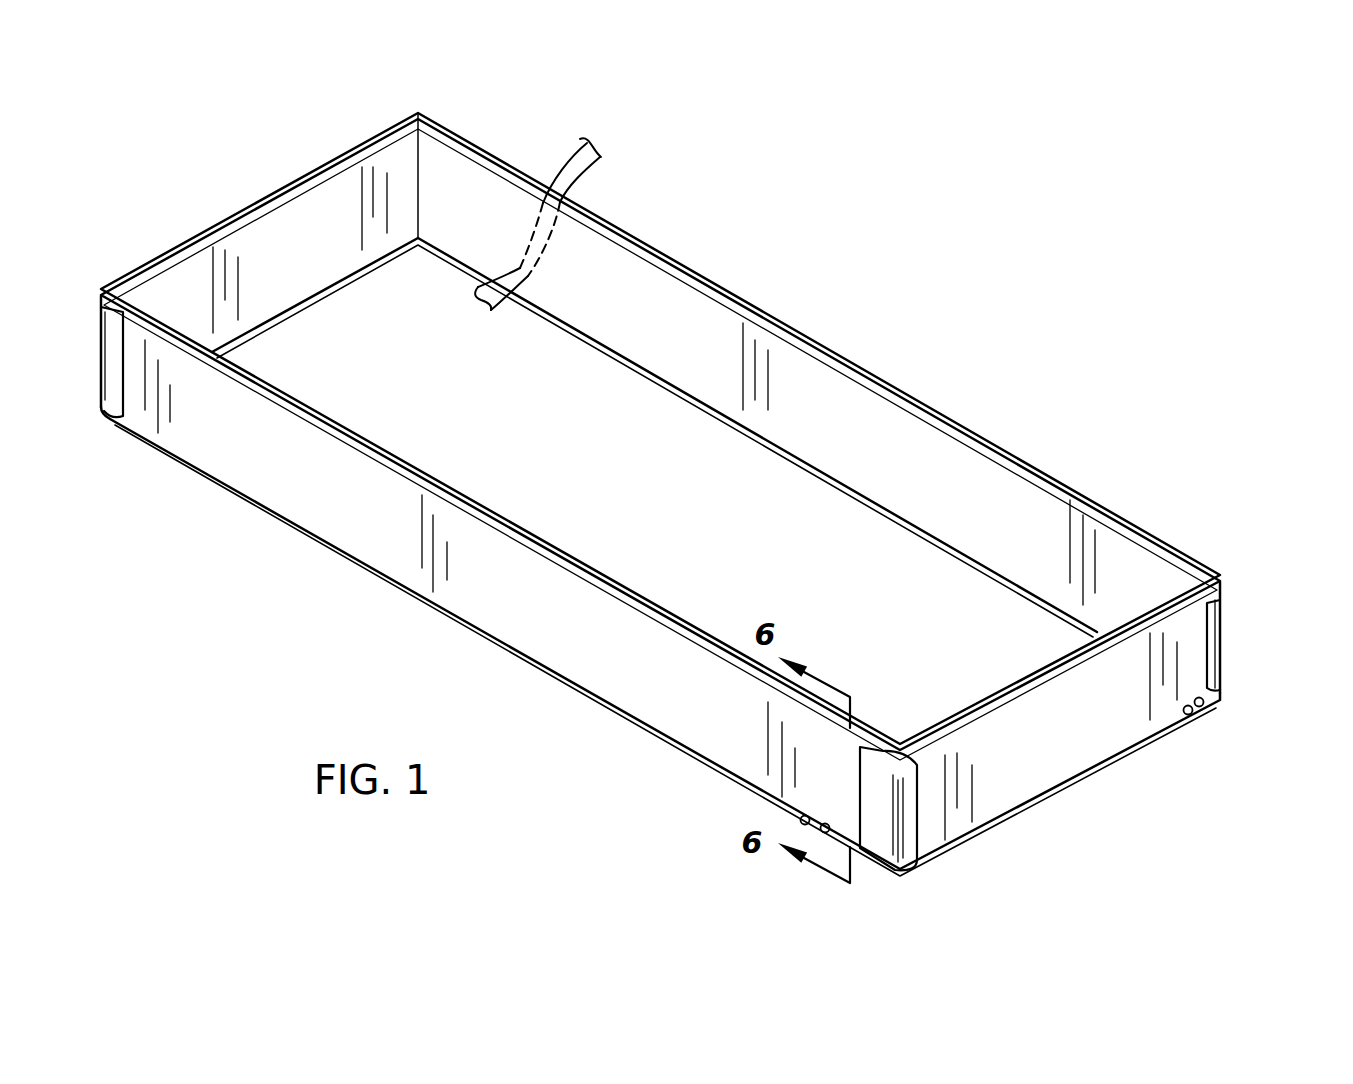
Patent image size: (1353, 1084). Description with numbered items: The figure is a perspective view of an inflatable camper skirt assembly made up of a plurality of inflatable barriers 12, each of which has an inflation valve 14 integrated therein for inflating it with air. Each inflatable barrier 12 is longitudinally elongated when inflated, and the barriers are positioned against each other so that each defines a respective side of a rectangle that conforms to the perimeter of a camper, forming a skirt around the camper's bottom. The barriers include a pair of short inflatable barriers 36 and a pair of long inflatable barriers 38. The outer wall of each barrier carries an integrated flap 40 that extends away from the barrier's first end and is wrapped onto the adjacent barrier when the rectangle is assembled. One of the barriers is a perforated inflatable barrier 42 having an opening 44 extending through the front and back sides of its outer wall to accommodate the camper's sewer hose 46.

The inflatable barrier 12 is at (275, 192).
The inflation valve 14 is at (1206, 707).
The short inflatable barrier 36 is at (300, 139).
The long inflatable barrier 38 is at (950, 367).
The flap 40 is at (882, 808).
The perforated inflatable barrier 42 is at (688, 230).
The opening 44 is at (512, 236).
The sewer hose 46 is at (580, 153).